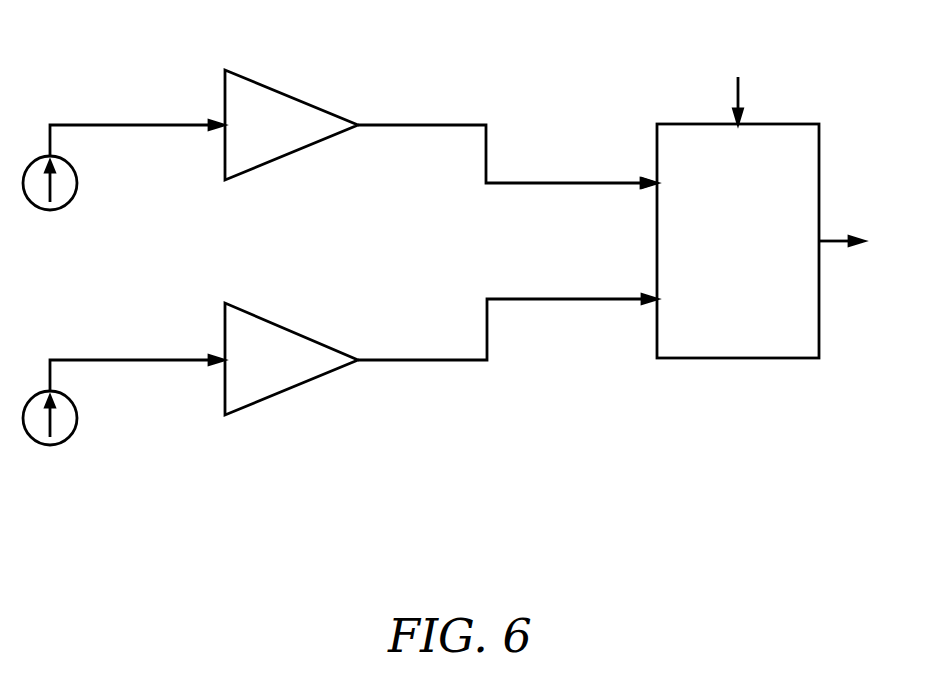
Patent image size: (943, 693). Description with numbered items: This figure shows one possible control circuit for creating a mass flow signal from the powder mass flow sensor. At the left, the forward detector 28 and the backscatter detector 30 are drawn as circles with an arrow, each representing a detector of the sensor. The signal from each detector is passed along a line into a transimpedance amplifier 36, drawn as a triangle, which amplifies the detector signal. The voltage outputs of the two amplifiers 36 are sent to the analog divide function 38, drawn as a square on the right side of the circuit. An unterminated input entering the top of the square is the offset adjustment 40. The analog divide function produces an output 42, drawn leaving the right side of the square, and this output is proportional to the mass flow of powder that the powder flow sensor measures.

The forward detector 28 is at (52, 211).
The backscatter detector 30 is at (58, 443).
The transimpedance amplifier 36 is at (285, 92).
The analog divide function 38 is at (741, 358).
The offset adjustment 40 is at (740, 86).
The analog divide function output 42 is at (857, 245).